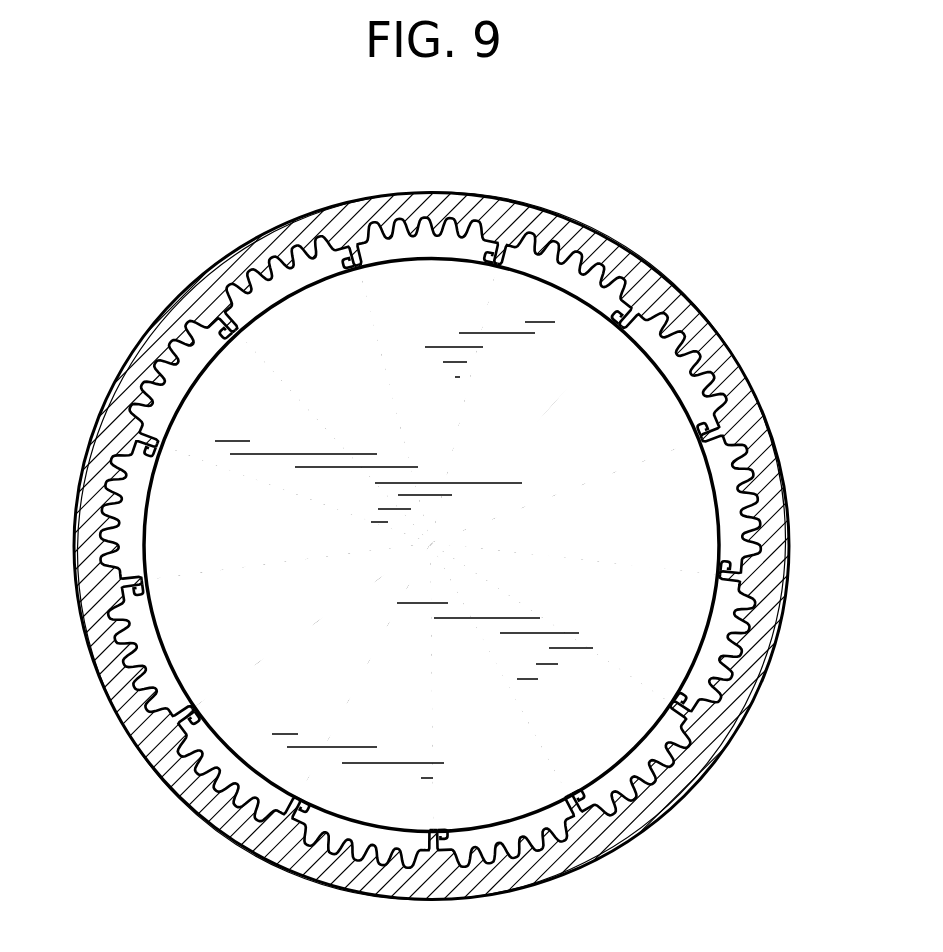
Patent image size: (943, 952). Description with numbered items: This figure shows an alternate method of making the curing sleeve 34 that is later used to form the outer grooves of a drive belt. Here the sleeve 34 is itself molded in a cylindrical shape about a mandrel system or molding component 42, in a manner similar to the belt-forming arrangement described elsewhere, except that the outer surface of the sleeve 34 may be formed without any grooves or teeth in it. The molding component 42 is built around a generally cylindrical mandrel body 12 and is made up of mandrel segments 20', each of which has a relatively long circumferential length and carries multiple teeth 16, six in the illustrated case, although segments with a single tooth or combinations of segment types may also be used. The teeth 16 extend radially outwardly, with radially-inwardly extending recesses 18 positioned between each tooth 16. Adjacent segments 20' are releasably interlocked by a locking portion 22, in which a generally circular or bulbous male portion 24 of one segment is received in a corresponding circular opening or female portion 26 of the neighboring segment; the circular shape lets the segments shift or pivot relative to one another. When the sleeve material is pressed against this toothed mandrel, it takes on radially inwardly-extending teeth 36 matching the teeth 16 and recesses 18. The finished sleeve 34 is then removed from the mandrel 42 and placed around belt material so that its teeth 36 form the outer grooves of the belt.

The mandrel body 12 is at (692, 487).
The teeth 16 is at (682, 347).
The recesses 18 is at (715, 380).
The mandrel segment 20' is at (431, 545).
The locking portion 22 is at (493, 240).
The male portion 24 is at (352, 245).
The female portion 26 is at (625, 290).
The curing sleeve 34 is at (657, 290).
The teeth 36 is at (683, 344).
The mandrel system 42 is at (140, 690).